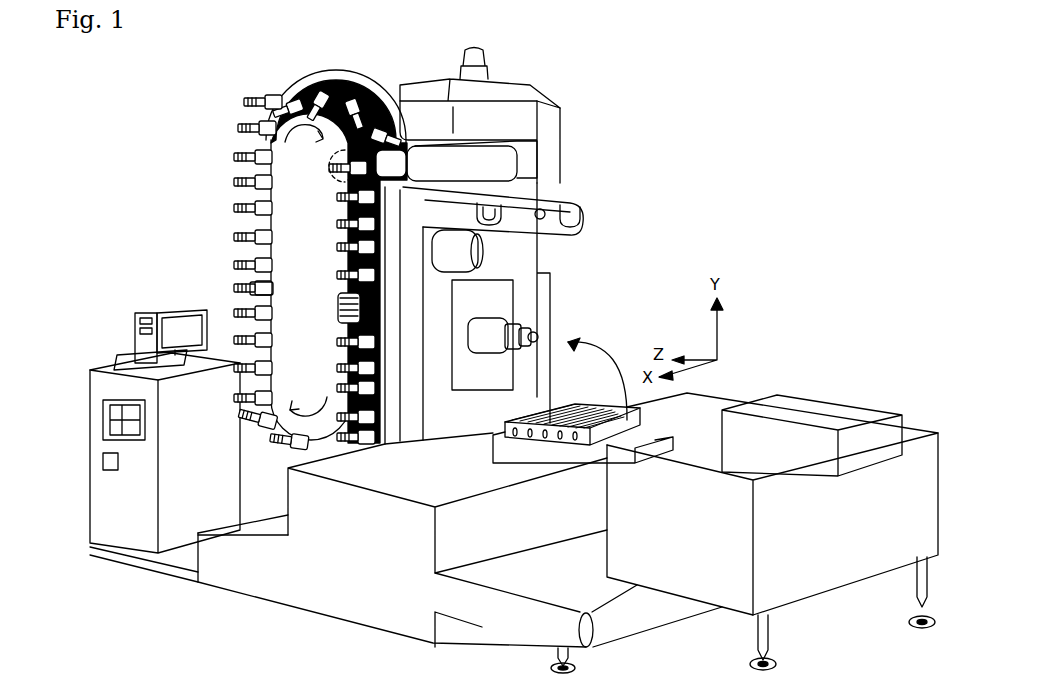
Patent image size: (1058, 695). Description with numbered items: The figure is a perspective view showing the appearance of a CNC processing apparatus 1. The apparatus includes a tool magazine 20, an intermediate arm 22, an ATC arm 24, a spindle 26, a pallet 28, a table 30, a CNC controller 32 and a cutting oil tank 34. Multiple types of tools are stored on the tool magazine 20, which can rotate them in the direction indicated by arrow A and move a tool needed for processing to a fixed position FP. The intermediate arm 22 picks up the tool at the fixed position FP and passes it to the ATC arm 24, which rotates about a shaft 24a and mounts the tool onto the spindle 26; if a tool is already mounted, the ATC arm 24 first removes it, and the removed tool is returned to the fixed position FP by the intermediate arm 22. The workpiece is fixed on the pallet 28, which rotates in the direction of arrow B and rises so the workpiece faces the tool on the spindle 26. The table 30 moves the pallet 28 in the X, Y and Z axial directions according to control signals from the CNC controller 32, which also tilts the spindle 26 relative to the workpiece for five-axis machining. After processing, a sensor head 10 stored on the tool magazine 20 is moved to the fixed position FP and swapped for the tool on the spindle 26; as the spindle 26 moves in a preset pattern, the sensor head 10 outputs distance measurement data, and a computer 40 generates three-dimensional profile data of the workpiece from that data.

The CNC processing apparatus 1 is at (184, 84).
The sensor head 10 is at (245, 296).
The tool magazine 20 is at (213, 226).
The intermediate arm 22 is at (507, 166).
The ATC arm 24 is at (587, 218).
The shaft 24a is at (556, 200).
The spindle 26 is at (520, 325).
The pallet 28 is at (572, 410).
The table 30 is at (363, 537).
The CNC controller 32 is at (97, 372).
The cutting oil tank 34 is at (812, 412).
The computer 40 is at (147, 305).
The arrow A is at (272, 140).
The arrow B is at (597, 367).
The fixed position FP is at (326, 170).